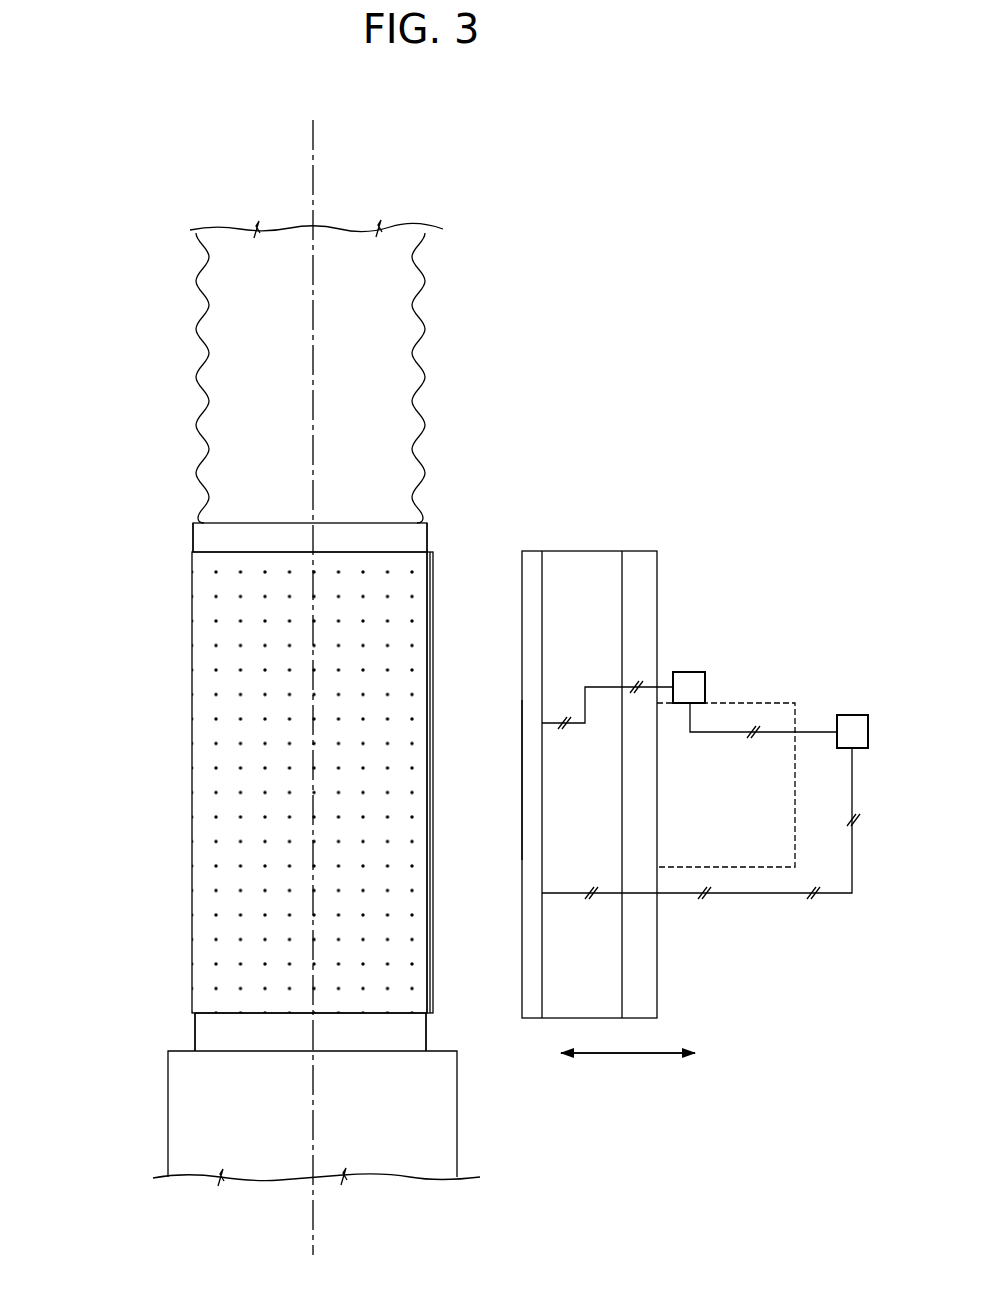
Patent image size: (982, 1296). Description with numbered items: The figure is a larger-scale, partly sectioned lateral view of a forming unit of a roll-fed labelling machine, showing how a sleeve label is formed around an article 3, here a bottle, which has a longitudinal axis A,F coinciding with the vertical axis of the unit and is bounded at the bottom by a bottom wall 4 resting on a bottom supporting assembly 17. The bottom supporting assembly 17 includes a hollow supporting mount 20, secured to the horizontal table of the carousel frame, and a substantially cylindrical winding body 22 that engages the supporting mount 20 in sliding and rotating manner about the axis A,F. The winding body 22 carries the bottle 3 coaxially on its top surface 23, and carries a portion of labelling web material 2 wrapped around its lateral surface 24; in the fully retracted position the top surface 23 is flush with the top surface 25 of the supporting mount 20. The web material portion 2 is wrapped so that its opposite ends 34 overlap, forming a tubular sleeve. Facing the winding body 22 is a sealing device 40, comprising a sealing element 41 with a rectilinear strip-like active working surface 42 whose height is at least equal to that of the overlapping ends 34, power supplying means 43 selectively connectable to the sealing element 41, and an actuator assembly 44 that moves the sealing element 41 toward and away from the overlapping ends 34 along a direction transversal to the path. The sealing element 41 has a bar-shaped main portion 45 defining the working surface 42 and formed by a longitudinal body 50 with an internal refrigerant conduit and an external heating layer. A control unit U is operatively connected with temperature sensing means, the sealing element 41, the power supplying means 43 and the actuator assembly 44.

The labelling web material portion 2 is at (214, 746).
The article 3 is at (376, 289).
The bottom wall 4 is at (224, 526).
The bottom supporting assembly 17 is at (154, 1027).
The supporting mount 20 is at (449, 1125).
The winding body 22 is at (430, 1029).
The top surface 23 is at (201, 517).
The lateral surface 24 is at (433, 540).
The top surface 25 is at (182, 1049).
The overlapping ends 34 is at (434, 683).
The sealing device 40 is at (667, 732).
The sealing element 41 is at (576, 550).
The active working surface 42 is at (522, 821).
The power supplying means 43 is at (852, 730).
The actuator assembly 44 is at (745, 722).
The main portion 45 is at (536, 551).
The longitudinal body 50 is at (528, 772).
The control unit U is at (690, 686).
The longitudinal axis and vertical axis A,F is at (312, 153).